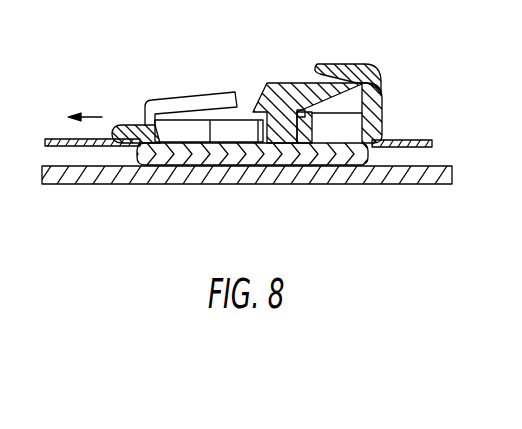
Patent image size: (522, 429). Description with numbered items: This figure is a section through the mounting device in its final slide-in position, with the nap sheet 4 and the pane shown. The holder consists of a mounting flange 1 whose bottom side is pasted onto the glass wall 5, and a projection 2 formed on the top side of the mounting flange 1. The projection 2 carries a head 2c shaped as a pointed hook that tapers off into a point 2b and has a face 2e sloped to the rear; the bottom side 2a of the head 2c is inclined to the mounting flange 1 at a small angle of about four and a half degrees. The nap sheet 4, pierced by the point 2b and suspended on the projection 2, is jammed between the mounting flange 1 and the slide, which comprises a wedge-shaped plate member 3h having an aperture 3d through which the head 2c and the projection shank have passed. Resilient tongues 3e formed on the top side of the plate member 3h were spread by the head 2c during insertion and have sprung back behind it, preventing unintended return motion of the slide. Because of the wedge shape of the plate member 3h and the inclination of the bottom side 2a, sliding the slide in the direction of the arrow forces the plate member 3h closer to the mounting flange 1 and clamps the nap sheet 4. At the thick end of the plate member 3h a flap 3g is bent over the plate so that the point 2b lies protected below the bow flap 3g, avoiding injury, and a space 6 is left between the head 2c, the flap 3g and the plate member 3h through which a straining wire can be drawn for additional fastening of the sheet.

The mounting flange 1 is at (212, 150).
The projection 2 is at (329, 127).
The bottom side of head 2a is at (312, 130).
The point 2b is at (378, 83).
The head 2c is at (285, 97).
The face sloped to the rear 2e is at (262, 95).
The aperture 3d is at (180, 128).
The resilient tongues 3e is at (179, 103).
The flap 3g is at (352, 76).
The wedge-shaped plate member 3h is at (130, 133).
The nap sheet 4 is at (70, 141).
The glass wall 5 is at (93, 170).
The space 6 is at (348, 98).